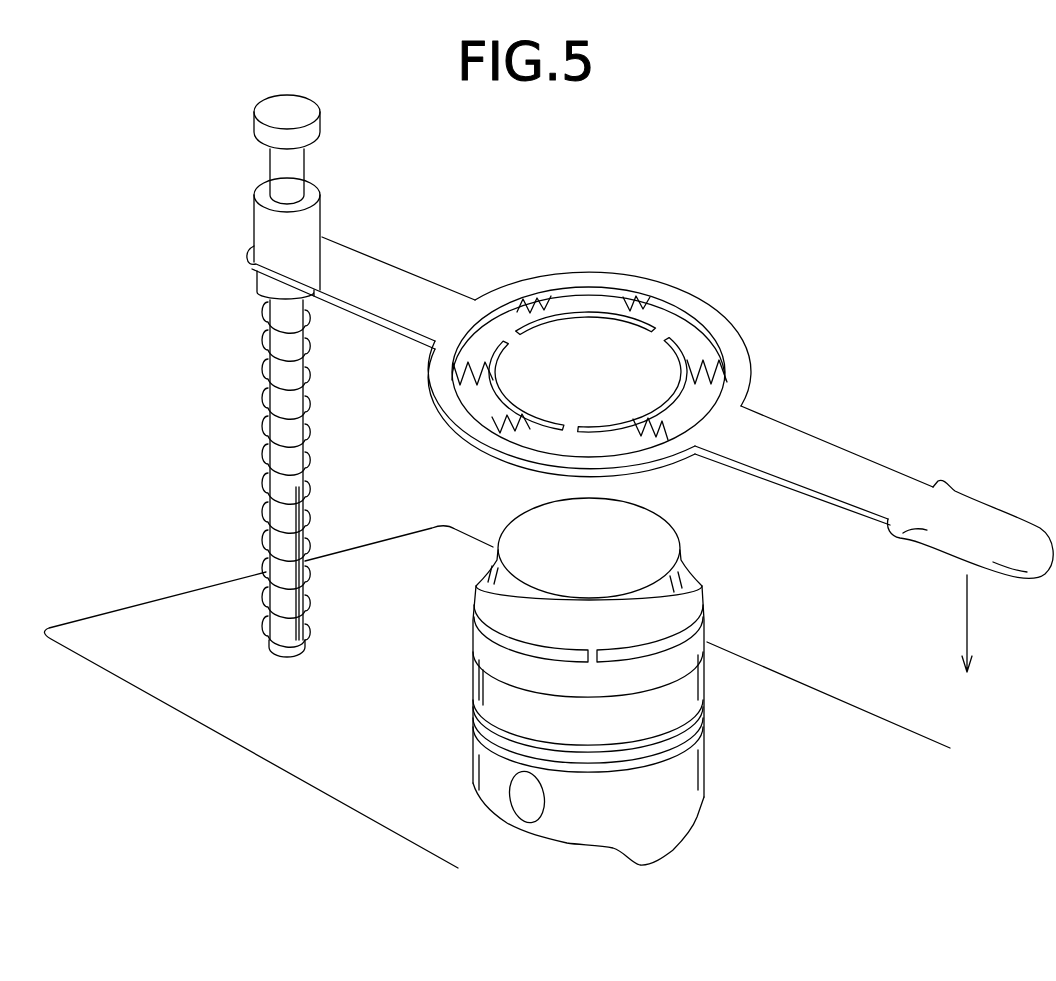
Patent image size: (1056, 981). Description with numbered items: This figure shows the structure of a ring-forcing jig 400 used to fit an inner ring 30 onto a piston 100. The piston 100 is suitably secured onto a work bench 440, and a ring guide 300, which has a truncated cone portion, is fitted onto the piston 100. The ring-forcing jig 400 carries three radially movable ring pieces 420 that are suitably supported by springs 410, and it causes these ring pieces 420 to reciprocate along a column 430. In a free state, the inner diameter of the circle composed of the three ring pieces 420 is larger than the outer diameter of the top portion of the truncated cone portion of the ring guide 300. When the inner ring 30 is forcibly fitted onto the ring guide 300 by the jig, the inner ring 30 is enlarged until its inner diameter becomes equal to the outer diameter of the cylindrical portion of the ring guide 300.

The inner ring 30 is at (703, 573).
The piston 100 is at (680, 803).
The ring guide 300 is at (687, 547).
The ring-forcing jig 400 is at (731, 308).
The springs 410 is at (636, 299).
The ring pieces 420 is at (570, 315).
The column 430 is at (293, 177).
The work bench 440 is at (800, 681).